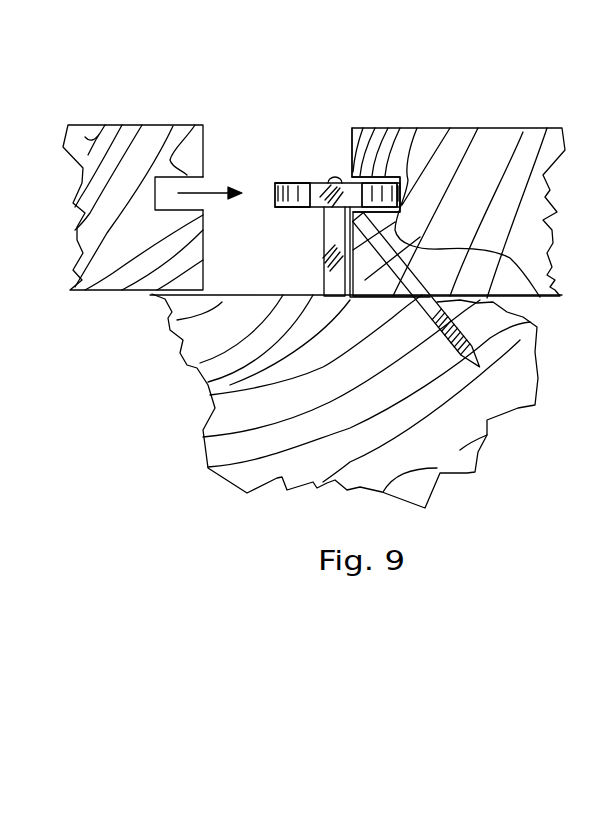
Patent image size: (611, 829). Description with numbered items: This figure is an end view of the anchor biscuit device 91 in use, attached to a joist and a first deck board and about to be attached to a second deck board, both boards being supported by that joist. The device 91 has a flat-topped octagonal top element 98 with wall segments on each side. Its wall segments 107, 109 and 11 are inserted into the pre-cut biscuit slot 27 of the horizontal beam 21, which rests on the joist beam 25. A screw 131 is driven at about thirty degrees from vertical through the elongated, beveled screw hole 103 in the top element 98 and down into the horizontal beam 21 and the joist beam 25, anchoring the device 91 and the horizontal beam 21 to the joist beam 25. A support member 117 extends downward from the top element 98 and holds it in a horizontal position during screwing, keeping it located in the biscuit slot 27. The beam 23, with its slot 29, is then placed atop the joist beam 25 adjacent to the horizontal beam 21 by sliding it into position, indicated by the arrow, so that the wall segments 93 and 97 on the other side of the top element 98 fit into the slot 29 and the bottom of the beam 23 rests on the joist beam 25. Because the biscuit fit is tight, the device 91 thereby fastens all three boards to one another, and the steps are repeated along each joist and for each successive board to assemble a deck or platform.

The wall segment 11 is at (326, 172).
The horizontal beam 21 is at (458, 181).
The beam 23 is at (85, 137).
The joist beam 25 is at (362, 397).
The biscuit slot 27 is at (541, 287).
The slot 29 is at (195, 125).
The anchor biscuit device 91 is at (296, 149).
The wall segment 93 is at (298, 208).
The wall segment 97 is at (277, 196).
The top element 98 is at (287, 183).
The screw hole 103 is at (320, 178).
The wall segment 107 is at (415, 128).
The wall segment 109 is at (480, 142).
The support member 117 is at (325, 246).
The screw 131 is at (337, 180).